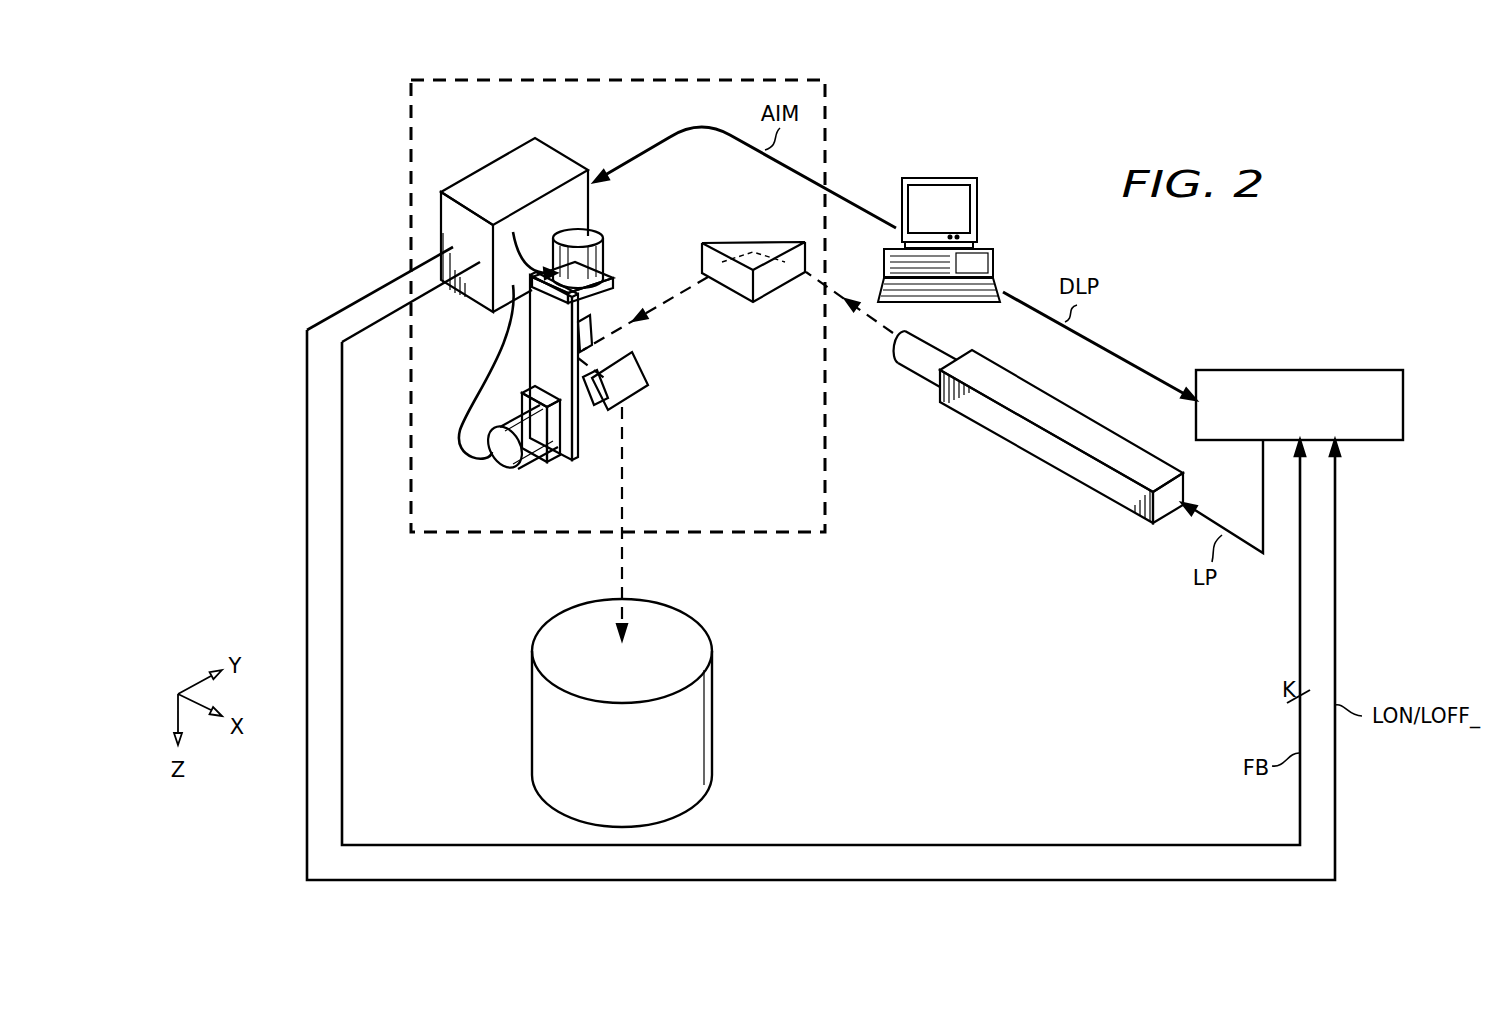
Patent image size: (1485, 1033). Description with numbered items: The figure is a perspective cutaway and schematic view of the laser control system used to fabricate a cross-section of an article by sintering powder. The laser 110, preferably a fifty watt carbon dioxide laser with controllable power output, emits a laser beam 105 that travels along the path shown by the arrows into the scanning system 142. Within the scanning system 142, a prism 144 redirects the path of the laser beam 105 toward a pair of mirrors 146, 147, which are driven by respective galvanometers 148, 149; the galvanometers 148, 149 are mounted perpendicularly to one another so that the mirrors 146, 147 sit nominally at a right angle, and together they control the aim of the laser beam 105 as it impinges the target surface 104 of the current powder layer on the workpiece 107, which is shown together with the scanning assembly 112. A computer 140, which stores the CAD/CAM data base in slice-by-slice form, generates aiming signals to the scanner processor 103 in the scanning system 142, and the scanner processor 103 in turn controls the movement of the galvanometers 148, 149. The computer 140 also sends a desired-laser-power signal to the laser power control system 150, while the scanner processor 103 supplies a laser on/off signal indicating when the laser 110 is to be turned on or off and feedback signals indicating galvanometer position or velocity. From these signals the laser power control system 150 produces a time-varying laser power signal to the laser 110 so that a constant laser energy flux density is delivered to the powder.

The scanning system 142 is at (588, 80).
The scanner processor 103 is at (478, 180).
The galvanometer 148 is at (590, 228).
The prism 144 is at (753, 245).
The mirror 146 is at (595, 338).
The scanning assembly 112 is at (667, 361).
The mirror 147 is at (645, 392).
The galvanometer 149 is at (507, 450).
The laser beam 105 is at (625, 563).
The target surface 104 is at (572, 620).
The workpiece 107 is at (540, 727).
The computer 140 is at (945, 177).
The laser 110 is at (1018, 440).
The laser power control system 150 is at (1308, 370).